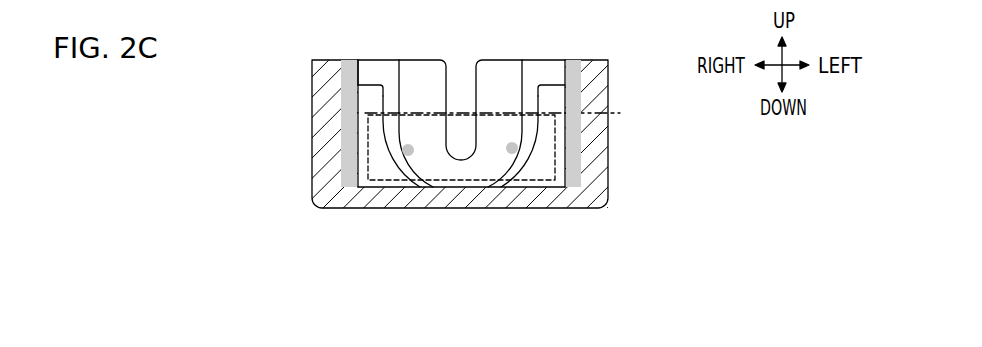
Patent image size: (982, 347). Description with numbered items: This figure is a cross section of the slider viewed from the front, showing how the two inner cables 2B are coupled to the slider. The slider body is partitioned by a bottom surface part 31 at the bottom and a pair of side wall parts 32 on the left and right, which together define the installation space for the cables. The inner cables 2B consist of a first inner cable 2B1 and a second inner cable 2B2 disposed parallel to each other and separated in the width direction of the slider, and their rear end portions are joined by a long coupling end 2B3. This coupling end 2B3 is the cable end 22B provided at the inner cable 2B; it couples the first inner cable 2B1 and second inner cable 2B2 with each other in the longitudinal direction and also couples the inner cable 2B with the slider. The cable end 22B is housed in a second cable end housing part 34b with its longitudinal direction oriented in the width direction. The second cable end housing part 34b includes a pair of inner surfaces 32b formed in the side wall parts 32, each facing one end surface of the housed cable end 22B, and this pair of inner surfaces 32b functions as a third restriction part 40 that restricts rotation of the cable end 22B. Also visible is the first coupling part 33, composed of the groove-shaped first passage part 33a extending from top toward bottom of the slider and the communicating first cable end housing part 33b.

The side wall part 32 is at (309, 102).
The bottom surface part 31 is at (403, 211).
The first coupling part 33 is at (534, 123).
The first passage part 33a is at (478, 80).
The first cable end housing part 33b is at (565, 112).
The second cable end housing part 34b is at (362, 60).
The inner surface 32b is at (335, 118).
The third restriction part 40 is at (348, 123).
The inner cable 2B is at (464, 125).
The first inner cable 2B1 is at (400, 152).
The second inner cable 2B2 is at (520, 150).
The coupling end 2B3 is at (492, 104).
The cable end 22B is at (462, 112).